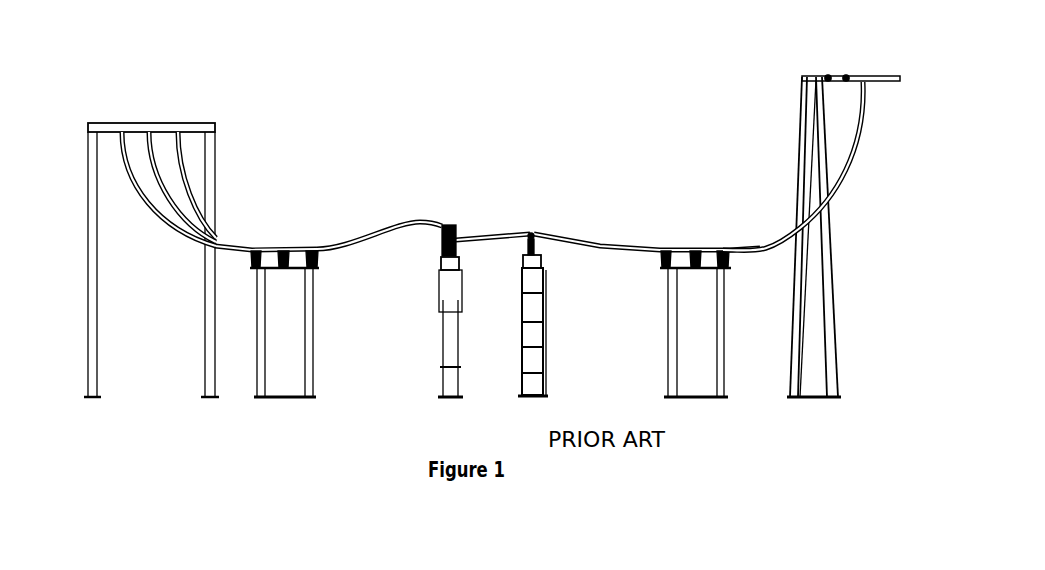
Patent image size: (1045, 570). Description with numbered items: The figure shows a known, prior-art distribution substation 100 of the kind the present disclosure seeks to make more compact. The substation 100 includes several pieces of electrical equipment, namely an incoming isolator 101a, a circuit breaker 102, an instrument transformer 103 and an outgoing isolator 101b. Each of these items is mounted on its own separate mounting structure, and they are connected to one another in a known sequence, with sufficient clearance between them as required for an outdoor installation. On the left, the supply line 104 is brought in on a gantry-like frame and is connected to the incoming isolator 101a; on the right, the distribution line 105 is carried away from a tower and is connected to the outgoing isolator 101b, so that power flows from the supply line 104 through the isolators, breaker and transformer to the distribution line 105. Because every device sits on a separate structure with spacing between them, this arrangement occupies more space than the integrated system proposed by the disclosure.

The distribution substation 100 is at (298, 92).
The incoming isolator 101a is at (286, 246).
The outgoing isolator 101b is at (705, 247).
The circuit breaker 102 is at (443, 222).
The instrument transformer 103 is at (530, 230).
The supply line 104 is at (88, 143).
The distribution line 105 is at (876, 77).